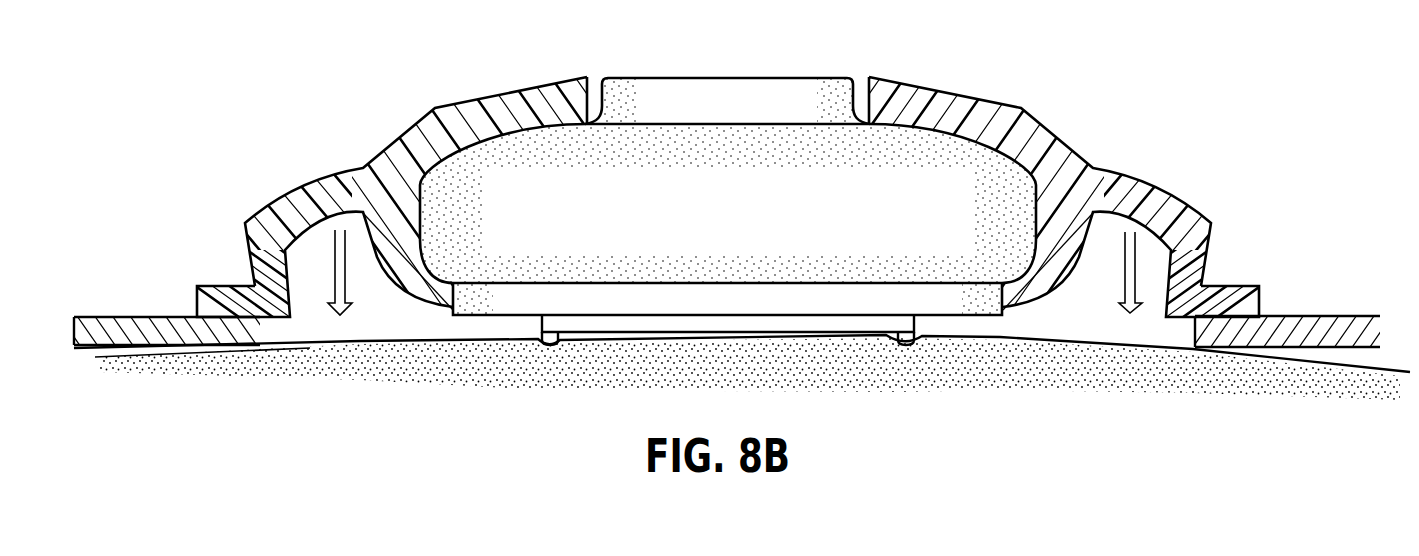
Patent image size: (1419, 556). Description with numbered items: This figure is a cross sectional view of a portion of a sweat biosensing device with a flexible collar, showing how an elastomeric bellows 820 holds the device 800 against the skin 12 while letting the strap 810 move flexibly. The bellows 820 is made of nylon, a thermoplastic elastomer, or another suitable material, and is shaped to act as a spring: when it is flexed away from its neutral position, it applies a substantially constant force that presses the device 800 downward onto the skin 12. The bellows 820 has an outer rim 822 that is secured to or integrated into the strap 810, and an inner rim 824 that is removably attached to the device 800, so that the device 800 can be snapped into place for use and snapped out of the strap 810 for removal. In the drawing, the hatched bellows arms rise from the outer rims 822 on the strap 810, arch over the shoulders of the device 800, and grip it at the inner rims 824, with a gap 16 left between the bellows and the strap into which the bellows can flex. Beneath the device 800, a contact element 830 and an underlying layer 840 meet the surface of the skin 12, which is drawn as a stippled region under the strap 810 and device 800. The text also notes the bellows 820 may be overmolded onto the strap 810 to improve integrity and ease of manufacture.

The device 800 is at (645, 78).
The strap 810 is at (113, 317).
The elastomeric bellows 820 is at (1017, 107).
The outer rim 822 is at (223, 286).
The inner rim 824 is at (483, 103).
The contact 830 is at (547, 347).
The membrane 840 is at (853, 323).
The skin 12 is at (1063, 338).
The gap 16 is at (330, 267).